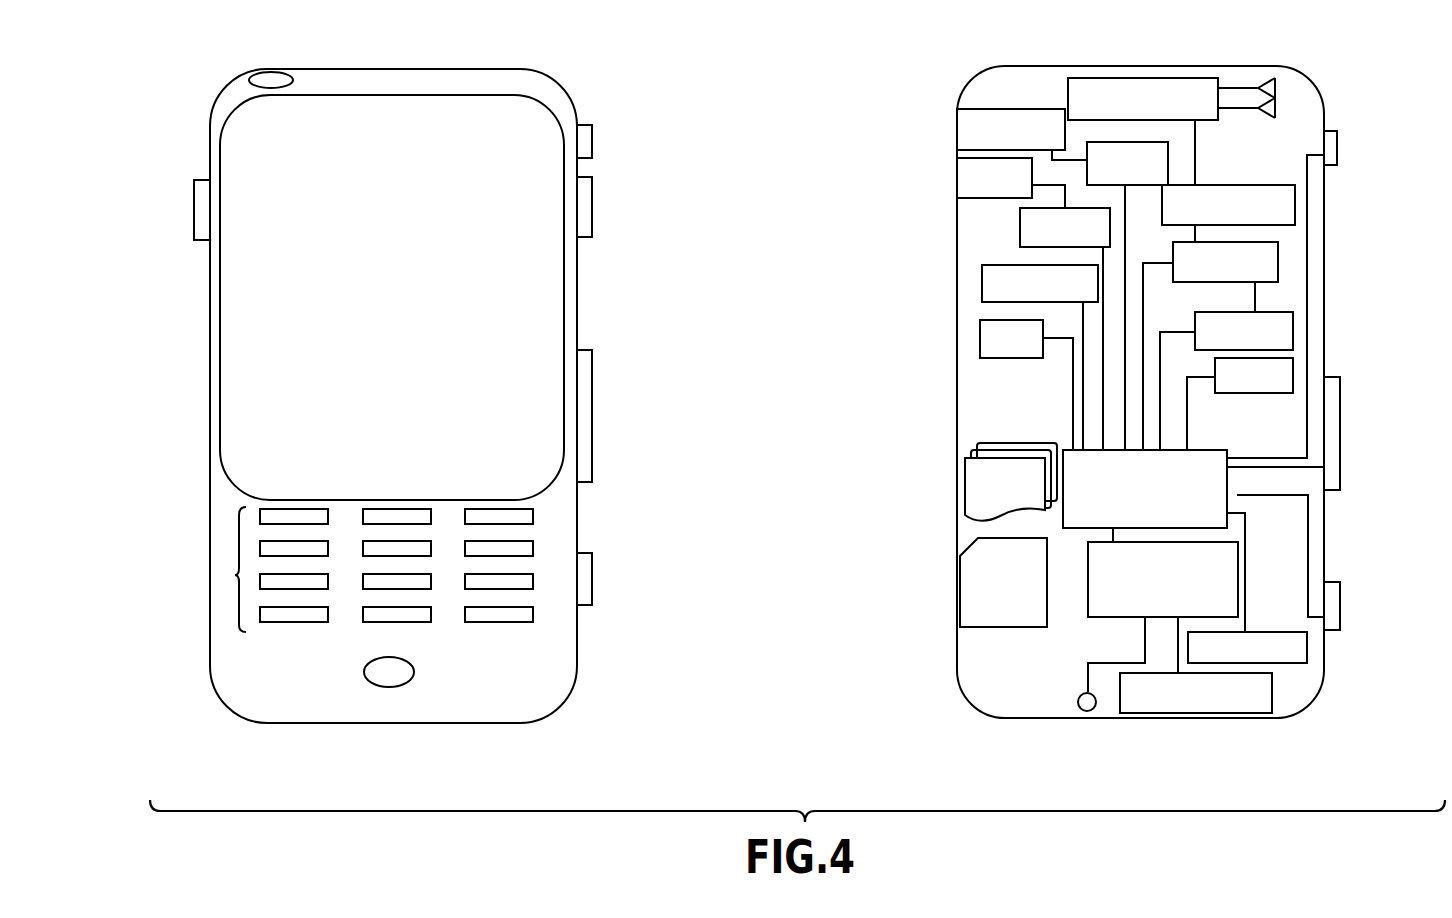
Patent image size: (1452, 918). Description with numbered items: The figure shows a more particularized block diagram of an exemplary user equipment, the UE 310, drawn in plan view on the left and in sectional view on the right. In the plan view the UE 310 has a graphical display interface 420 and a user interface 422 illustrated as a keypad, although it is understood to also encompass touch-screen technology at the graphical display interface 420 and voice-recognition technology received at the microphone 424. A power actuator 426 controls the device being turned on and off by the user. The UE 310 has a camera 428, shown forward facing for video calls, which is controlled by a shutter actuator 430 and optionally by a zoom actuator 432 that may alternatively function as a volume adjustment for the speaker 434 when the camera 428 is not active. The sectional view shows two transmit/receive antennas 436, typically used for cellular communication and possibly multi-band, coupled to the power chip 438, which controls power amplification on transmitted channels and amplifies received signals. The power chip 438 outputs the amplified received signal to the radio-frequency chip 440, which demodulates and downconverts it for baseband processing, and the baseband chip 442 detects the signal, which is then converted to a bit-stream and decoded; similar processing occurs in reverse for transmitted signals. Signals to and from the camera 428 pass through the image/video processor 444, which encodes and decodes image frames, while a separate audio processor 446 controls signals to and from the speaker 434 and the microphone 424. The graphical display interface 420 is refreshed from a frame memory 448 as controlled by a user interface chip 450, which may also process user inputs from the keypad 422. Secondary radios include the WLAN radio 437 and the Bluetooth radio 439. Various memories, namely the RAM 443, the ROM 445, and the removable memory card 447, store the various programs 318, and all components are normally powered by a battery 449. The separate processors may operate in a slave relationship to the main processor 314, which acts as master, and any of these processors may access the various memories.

The user equipment 310 is at (562, 760).
The main processor 314 is at (1073, 453).
The programs 318 is at (971, 496).
The graphical display interface 420 is at (245, 315).
The user interface 422 is at (238, 574).
The microphone 424 is at (392, 677).
The power actuator 426 is at (586, 140).
The camera 428 is at (275, 76).
The shutter actuator 430 is at (590, 573).
The zoom actuator 432 is at (588, 400).
The speaker 434 is at (200, 186).
The transmit/receive antennas 436 is at (1277, 78).
The WLAN radio 437 is at (985, 295).
The power chip 438 is at (1135, 78).
The Bluetooth radio 439 is at (983, 340).
The radio-frequency chip 440 is at (1288, 215).
The baseband chip 442 is at (1278, 265).
The random access memory 443 is at (1288, 330).
The image/video processor 444 is at (1165, 178).
The read only memory 445 is at (1290, 375).
The audio processor 446 is at (1020, 230).
The memory card 447 is at (971, 563).
The frame memory 448 is at (1195, 713).
The battery 449 is at (1298, 660).
The user interface chip 450 is at (1113, 607).